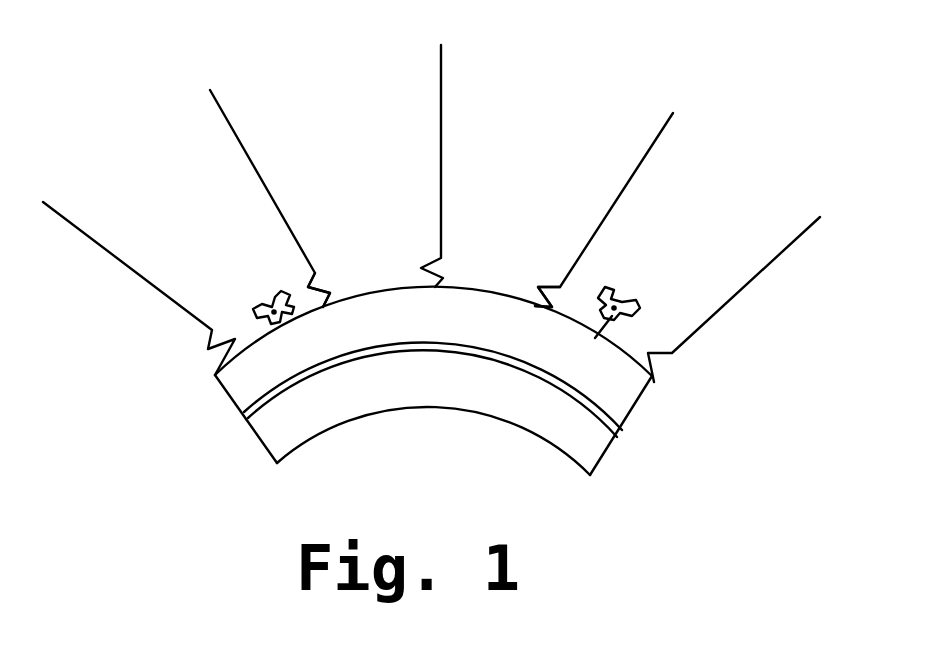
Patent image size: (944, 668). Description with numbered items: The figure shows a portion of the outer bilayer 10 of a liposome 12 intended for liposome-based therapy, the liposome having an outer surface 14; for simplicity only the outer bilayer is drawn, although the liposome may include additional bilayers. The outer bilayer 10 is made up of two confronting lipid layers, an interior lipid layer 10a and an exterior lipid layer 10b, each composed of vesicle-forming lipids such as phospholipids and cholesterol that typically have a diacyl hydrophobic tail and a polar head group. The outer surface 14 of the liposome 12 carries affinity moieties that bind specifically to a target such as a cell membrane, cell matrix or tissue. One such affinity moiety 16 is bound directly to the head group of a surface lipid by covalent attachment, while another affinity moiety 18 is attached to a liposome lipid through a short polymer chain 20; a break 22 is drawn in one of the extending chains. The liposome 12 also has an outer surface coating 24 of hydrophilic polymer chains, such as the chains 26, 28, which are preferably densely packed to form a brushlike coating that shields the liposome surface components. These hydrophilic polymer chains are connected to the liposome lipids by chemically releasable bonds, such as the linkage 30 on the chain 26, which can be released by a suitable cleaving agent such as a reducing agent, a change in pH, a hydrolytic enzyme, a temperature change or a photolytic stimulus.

The outer bilayer 10 is at (429, 423).
The interior lipid layer 10a is at (257, 445).
The exterior lipid layer 10b is at (238, 392).
The liposome 12 is at (640, 456).
The outer surface 14 is at (653, 380).
The affinity moiety 16 is at (268, 302).
The affinity moiety 18 is at (616, 287).
The short polymer chain 20 is at (621, 230).
The beam break 22 is at (525, 269).
The outer surface coating 24 is at (437, 206).
The hydrophilic polymer chain 26 is at (300, 168).
The hydrophilic polymer chain 28 is at (750, 285).
The releasable linkage 30 is at (329, 270).